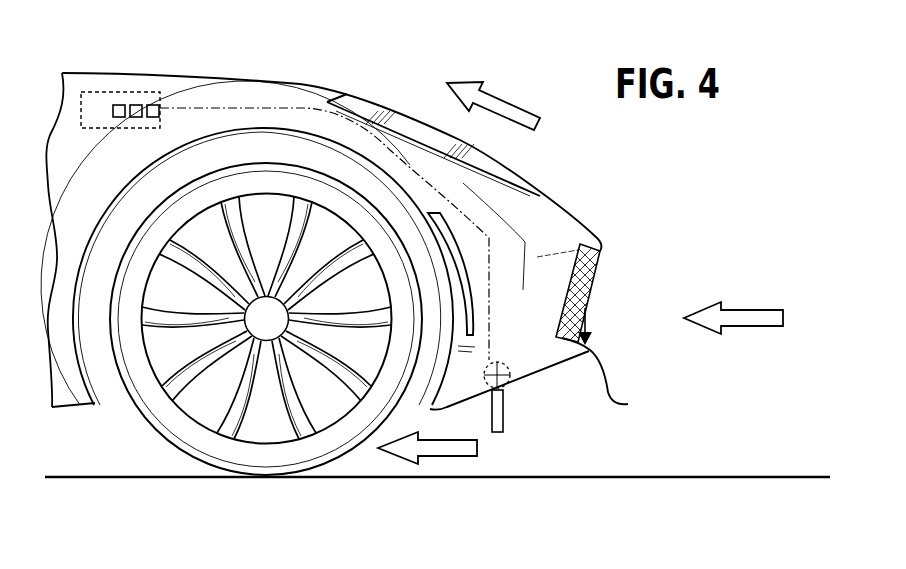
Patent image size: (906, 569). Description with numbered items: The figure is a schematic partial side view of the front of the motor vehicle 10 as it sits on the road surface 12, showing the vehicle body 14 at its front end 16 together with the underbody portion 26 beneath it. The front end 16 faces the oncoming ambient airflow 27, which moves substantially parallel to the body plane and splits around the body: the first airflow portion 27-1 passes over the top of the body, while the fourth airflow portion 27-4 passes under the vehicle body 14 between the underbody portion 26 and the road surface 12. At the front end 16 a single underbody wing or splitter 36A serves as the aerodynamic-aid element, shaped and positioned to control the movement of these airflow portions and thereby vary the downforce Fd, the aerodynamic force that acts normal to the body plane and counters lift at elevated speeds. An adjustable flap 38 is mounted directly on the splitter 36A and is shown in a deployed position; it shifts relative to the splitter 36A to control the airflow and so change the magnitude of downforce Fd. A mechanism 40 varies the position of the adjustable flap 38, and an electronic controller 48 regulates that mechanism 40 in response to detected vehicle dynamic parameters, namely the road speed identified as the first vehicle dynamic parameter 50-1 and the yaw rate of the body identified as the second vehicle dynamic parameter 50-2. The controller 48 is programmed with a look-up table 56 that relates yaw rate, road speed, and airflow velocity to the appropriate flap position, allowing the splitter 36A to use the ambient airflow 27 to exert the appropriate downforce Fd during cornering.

The motor vehicle 10 is at (343, 66).
The road surface 12 is at (137, 478).
The vehicle body 14 is at (237, 90).
The front end 16 is at (550, 196).
The underbody portion 26 is at (67, 410).
The ambient airflow 27 is at (738, 307).
The first airflow portion 27-1 is at (518, 103).
The fourth airflow portion 27-4 is at (442, 457).
The splitter 36A is at (612, 388).
The adjustable flap 38 is at (505, 412).
The mechanism 40 is at (513, 366).
The electronic controller 48 is at (104, 120).
The first vehicle dynamic parameter 50-1 is at (137, 105).
The second vehicle dynamic parameter 50-2 is at (152, 105).
The look-up table 56 is at (119, 105).
The downforce Fd is at (587, 312).